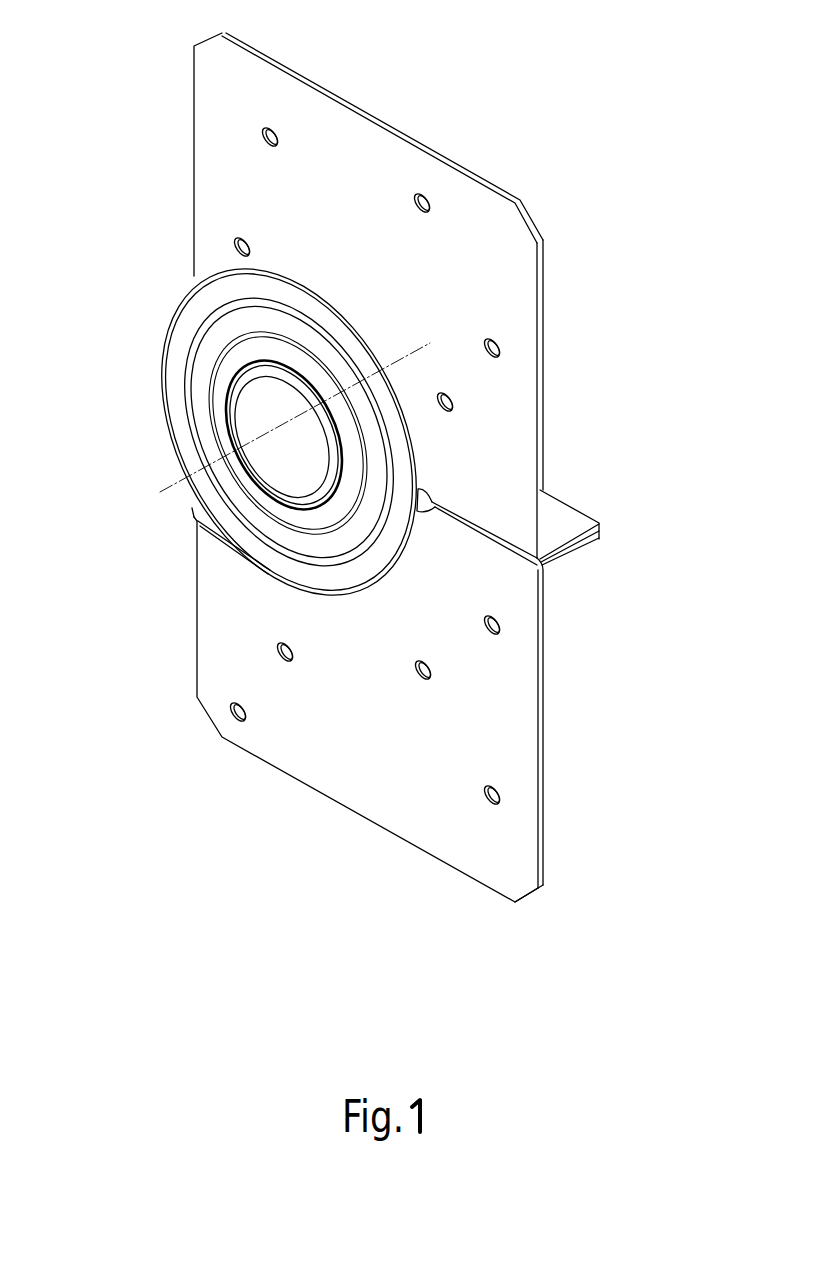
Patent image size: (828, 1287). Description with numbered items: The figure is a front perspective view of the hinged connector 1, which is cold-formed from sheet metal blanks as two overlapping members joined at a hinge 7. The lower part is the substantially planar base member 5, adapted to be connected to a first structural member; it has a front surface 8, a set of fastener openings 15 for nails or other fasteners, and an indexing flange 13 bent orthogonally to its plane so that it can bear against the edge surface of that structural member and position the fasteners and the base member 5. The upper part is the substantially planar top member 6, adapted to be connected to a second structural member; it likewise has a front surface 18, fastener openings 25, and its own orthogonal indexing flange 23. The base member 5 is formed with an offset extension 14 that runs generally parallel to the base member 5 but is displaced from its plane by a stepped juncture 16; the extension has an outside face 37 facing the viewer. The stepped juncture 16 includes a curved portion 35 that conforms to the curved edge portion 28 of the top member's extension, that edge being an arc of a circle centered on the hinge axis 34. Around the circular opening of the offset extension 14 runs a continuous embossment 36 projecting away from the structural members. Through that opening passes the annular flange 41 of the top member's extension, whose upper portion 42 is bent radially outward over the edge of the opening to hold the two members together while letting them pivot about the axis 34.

The hinged connector 1 is at (538, 222).
The base member 5 is at (543, 663).
The top member 6 is at (543, 381).
The hinge 7 is at (289, 367).
The front surface 8 is at (500, 736).
The indexing flange 13 is at (585, 548).
The offset extension 14 is at (202, 500).
The fastener openings 15 is at (244, 707).
The stepped juncture 16 is at (358, 591).
The front surface 18 is at (462, 202).
The indexing flange 23 is at (584, 512).
The fastener openings 25 is at (283, 143).
The curved edge portion 28 is at (405, 563).
The axis 34 is at (178, 485).
The curved portion 35 is at (412, 537).
The embossment 36 is at (375, 482).
The outside face 37 is at (236, 516).
The annular flange 41 is at (243, 408).
The upper portion 42 is at (232, 362).